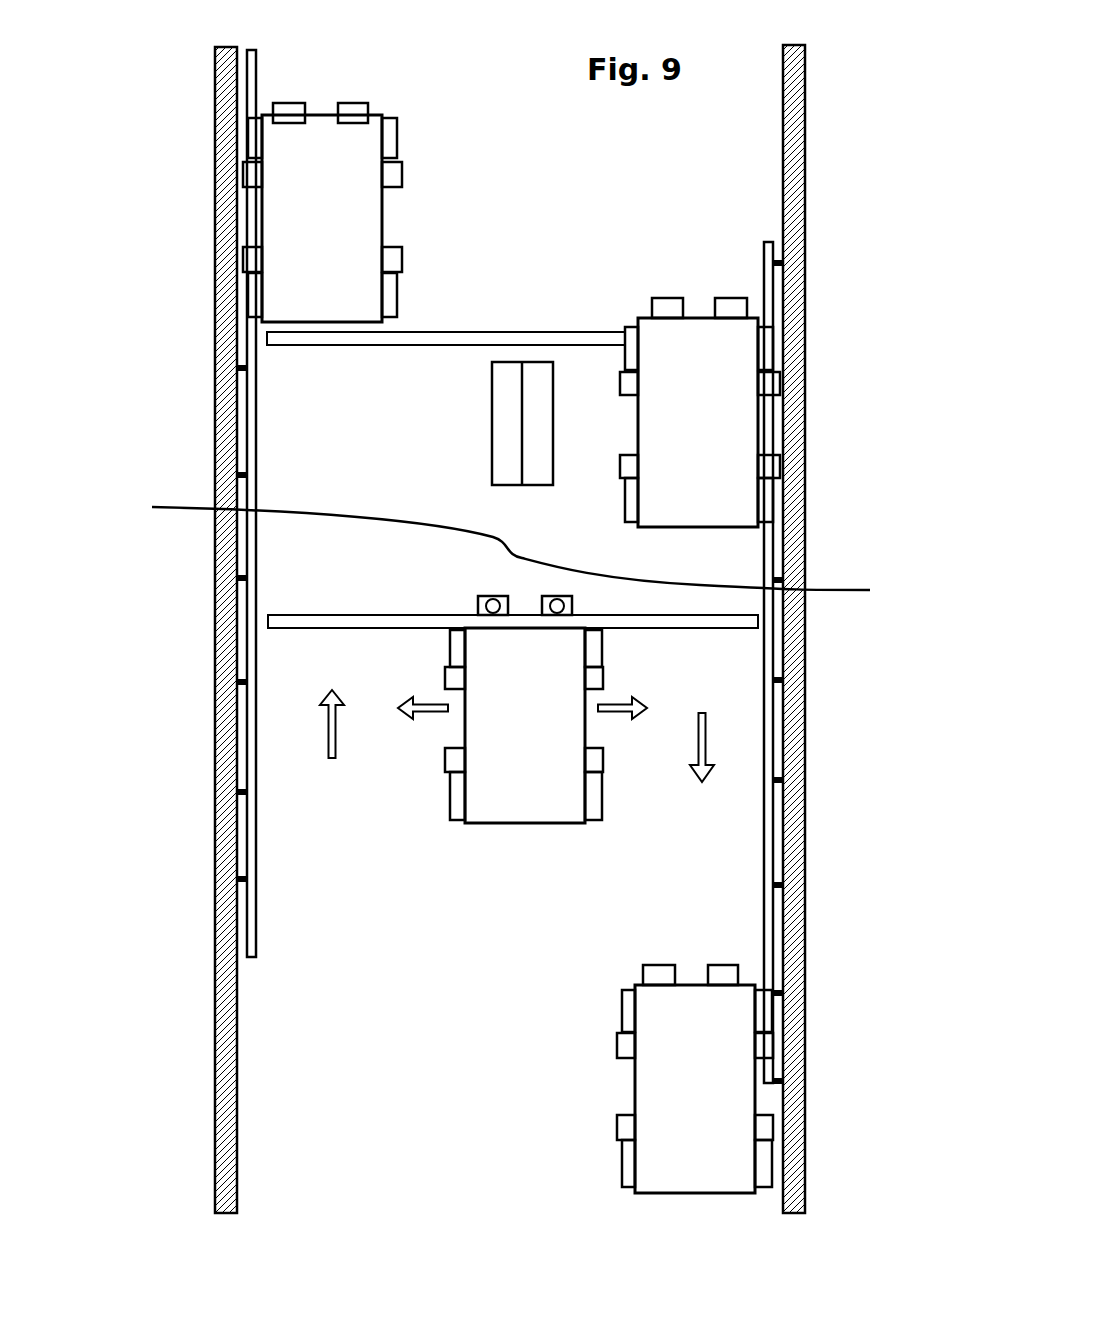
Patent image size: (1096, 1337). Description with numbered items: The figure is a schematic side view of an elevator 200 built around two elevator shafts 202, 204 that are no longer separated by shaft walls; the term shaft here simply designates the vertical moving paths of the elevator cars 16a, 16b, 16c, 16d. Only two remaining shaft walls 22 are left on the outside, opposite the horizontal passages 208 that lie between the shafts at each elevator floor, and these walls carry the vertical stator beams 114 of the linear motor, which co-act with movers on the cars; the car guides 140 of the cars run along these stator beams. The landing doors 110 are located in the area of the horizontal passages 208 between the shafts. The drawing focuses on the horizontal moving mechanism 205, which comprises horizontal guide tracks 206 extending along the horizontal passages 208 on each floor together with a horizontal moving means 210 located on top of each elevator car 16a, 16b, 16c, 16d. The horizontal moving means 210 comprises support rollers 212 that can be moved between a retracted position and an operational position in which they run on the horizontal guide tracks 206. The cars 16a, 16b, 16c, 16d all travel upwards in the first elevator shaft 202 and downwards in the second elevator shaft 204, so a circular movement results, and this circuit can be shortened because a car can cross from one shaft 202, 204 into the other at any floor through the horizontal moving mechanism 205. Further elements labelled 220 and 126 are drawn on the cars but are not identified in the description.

The elevator 200 is at (150, 115).
The shaft wall 22 is at (793, 102).
The vertical stator beam 114 is at (772, 232).
The elevator car 16a is at (332, 243).
The elevator car 16b is at (702, 442).
The elevator car 16c is at (543, 735).
The elevator car 16d is at (716, 1093).
The coupling member 220 is at (287, 115).
The latch 126 is at (395, 140).
The car guide 140 is at (400, 252).
The support roller 212 is at (542, 600).
The horizontal guide track 206 is at (323, 338).
The landing door 110 is at (510, 423).
The horizontal moving means 210 is at (343, 97).
The horizontal moving mechanism 205 is at (643, 263).
The second elevator shaft 204 is at (732, 865).
The first elevator shaft 202 is at (303, 908).
The horizontal passage 208 is at (490, 934).